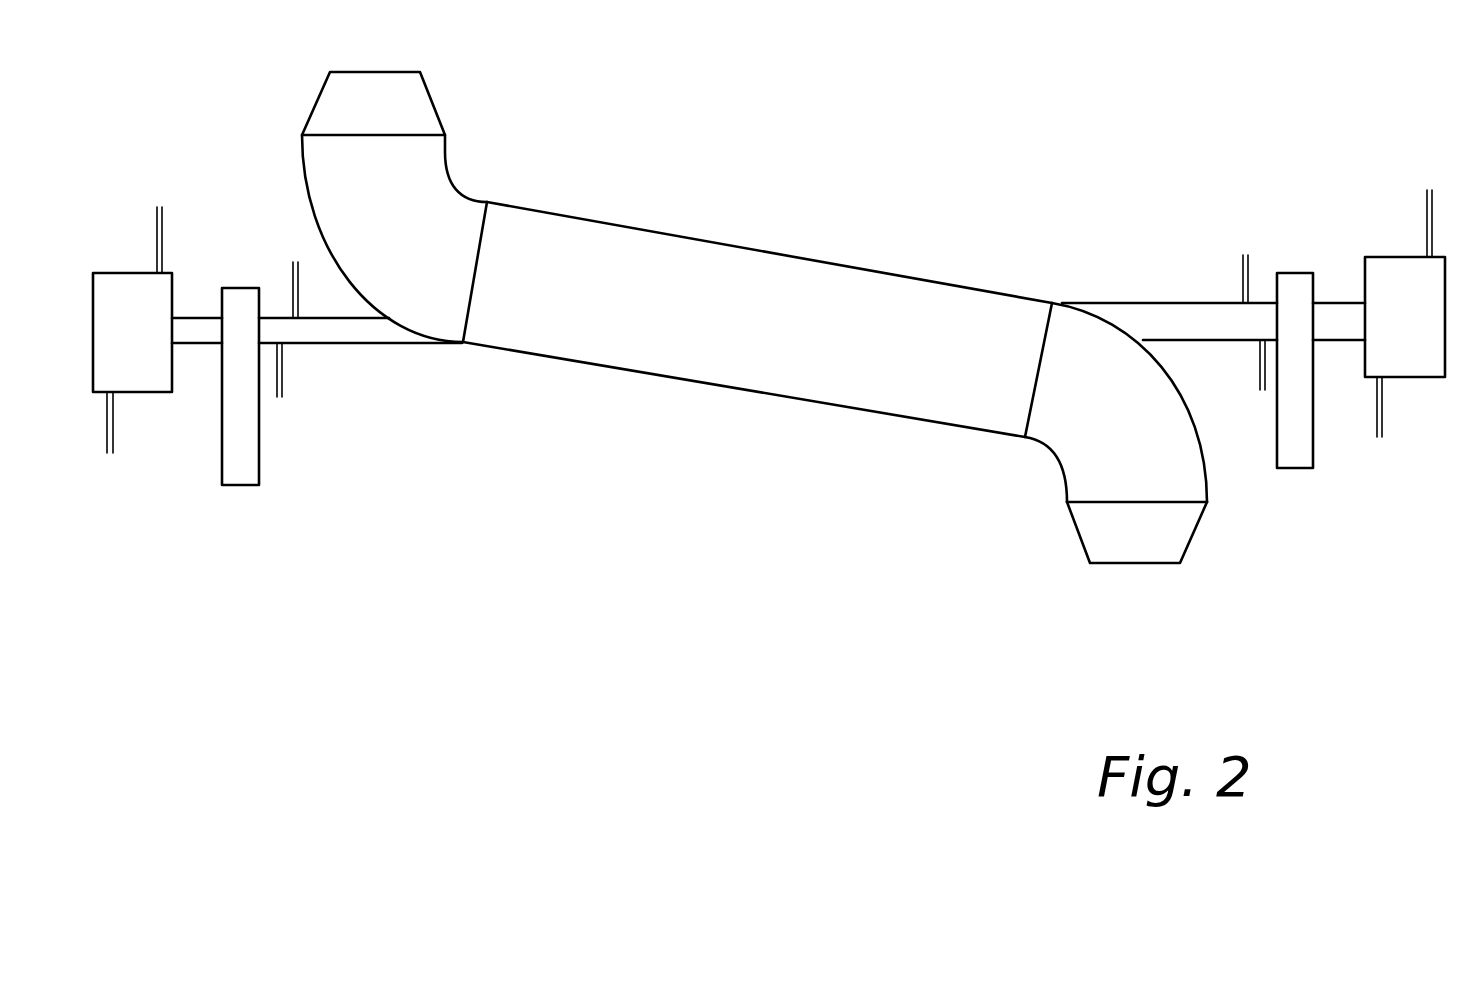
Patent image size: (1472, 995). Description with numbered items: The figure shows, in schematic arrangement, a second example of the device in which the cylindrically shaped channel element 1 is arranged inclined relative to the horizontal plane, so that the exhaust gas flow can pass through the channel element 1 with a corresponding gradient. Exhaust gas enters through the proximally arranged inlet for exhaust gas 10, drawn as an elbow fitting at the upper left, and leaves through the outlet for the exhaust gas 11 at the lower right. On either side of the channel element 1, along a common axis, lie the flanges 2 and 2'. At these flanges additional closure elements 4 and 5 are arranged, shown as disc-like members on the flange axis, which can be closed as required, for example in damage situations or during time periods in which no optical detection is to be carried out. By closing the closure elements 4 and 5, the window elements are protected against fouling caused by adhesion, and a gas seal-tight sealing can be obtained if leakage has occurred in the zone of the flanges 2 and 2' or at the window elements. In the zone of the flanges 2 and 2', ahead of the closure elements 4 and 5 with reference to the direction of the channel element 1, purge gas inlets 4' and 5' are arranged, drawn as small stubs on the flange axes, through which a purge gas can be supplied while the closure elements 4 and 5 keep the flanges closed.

The channel element 1 is at (754, 348).
The flange 2 is at (317, 375).
The flange 2' is at (1213, 276).
The closure element 4 is at (204, 408).
The purge gas inlet 4' is at (291, 348).
The closure element 5 is at (1321, 400).
The purge gas inlet 5' is at (1263, 326).
The inlet for exhaust gas 10 is at (300, 157).
The outlet for the exhaust gas 11 is at (1063, 473).